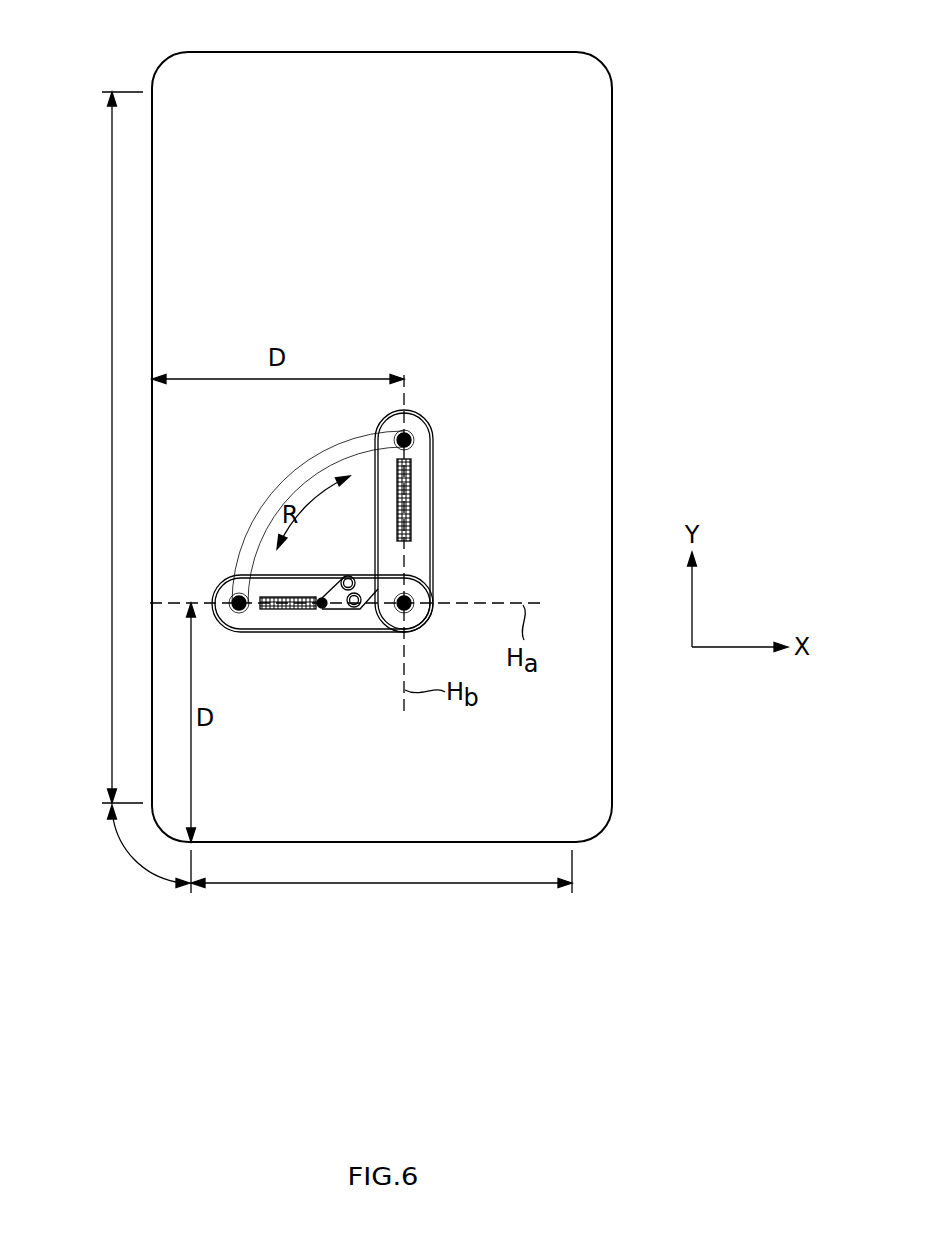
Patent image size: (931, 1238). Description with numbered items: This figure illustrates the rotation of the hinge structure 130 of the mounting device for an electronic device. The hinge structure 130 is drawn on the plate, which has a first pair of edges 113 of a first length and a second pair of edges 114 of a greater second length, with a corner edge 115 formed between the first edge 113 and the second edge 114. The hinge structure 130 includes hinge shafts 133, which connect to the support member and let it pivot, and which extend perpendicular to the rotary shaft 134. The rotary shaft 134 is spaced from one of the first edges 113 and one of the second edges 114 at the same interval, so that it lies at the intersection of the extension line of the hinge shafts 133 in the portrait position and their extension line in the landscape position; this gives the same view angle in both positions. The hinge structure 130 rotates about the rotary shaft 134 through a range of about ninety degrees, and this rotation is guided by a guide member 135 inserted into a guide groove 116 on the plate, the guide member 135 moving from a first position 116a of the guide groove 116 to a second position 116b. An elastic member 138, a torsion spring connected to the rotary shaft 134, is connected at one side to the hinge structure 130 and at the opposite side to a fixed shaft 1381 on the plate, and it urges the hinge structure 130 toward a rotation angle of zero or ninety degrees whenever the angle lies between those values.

The first pair of edges 113 is at (381, 883).
The second pair of edges 114 is at (103, 447).
The corner edge 115 is at (145, 852).
The guide groove 116 is at (284, 483).
The first position of the guide groove 116a is at (239, 613).
The second position of the guide groove 116b is at (412, 436).
The hinge structure 130 is at (228, 562).
The hinge shafts 133 is at (411, 497).
The rotary shaft 134 is at (411, 611).
The guide member 135 is at (233, 600).
The elastic member 138 is at (343, 551).
The fixed shaft 1381 is at (323, 610).